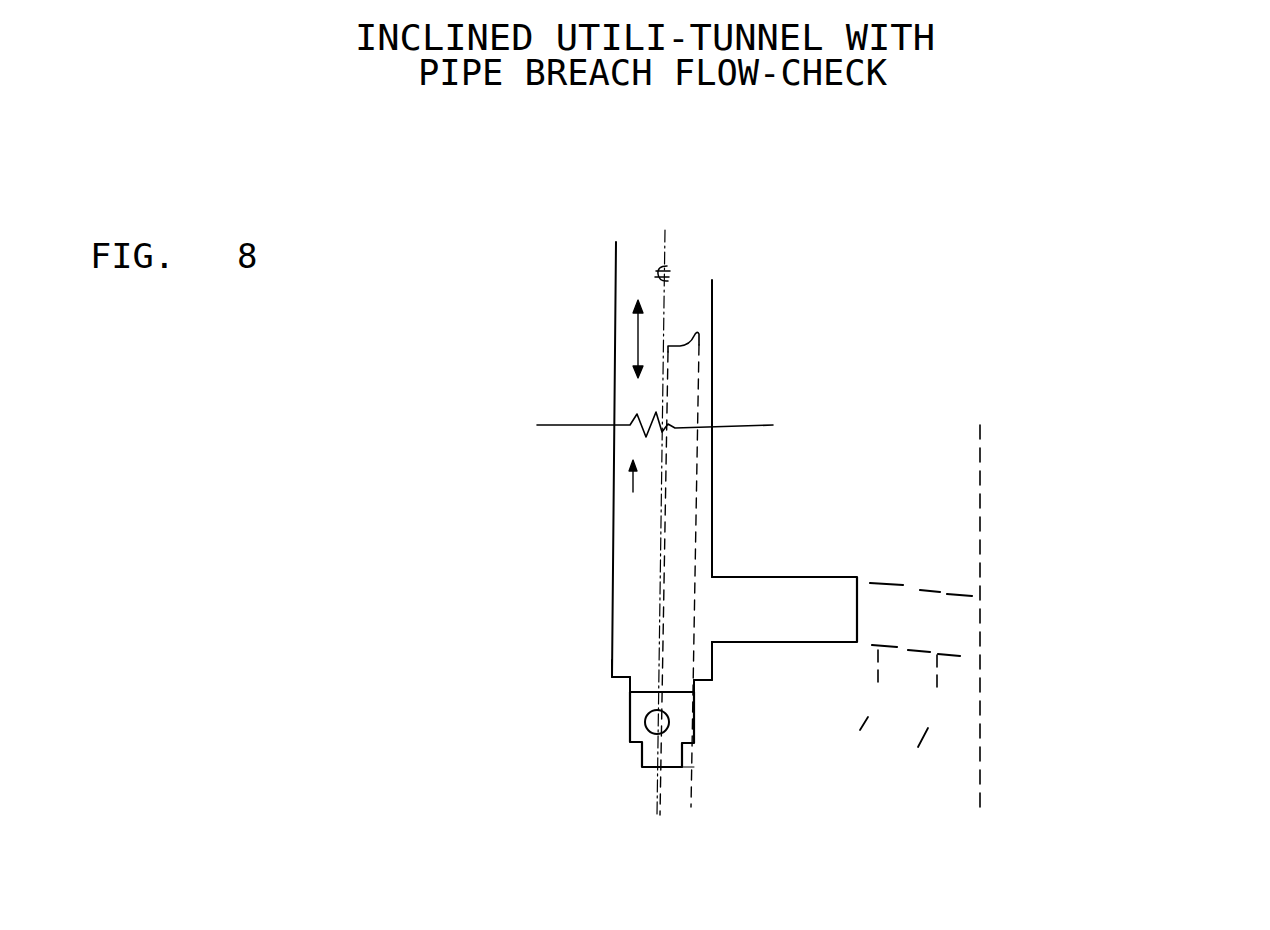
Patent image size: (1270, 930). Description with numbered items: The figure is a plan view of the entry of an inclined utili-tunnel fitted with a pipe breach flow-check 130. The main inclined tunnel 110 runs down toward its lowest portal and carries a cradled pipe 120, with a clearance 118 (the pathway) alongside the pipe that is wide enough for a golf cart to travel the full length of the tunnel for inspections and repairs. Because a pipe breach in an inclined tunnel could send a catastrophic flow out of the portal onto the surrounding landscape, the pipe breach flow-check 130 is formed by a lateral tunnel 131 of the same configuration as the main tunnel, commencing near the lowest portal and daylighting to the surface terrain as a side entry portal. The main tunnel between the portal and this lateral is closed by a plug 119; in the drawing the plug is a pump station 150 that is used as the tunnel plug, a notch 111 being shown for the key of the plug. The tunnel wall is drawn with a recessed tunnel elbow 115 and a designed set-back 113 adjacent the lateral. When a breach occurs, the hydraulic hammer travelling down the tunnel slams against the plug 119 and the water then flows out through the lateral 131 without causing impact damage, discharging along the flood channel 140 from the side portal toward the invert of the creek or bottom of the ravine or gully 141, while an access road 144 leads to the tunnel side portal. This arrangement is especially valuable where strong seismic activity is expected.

The tunnel portal 110 is at (677, 245).
The clearance 118 is at (638, 338).
The pipe 120 is at (703, 352).
The pipe breach flow-check 130 is at (792, 572).
The lateral tunnel 131 is at (1019, 615).
The Flood channel from side portal 140 is at (935, 585).
The Invert of creek, or bottom of ravine or gully 141 is at (985, 653).
The Access road to tunnel side portal 144 is at (928, 728).
The Recessed tunnel elbow 115 is at (620, 662).
The Designed set-back 113 is at (718, 655).
The pump station 150 is at (628, 710).
The plug 119 is at (753, 747).
The Notch for key of tunnel plug 111 is at (687, 747).